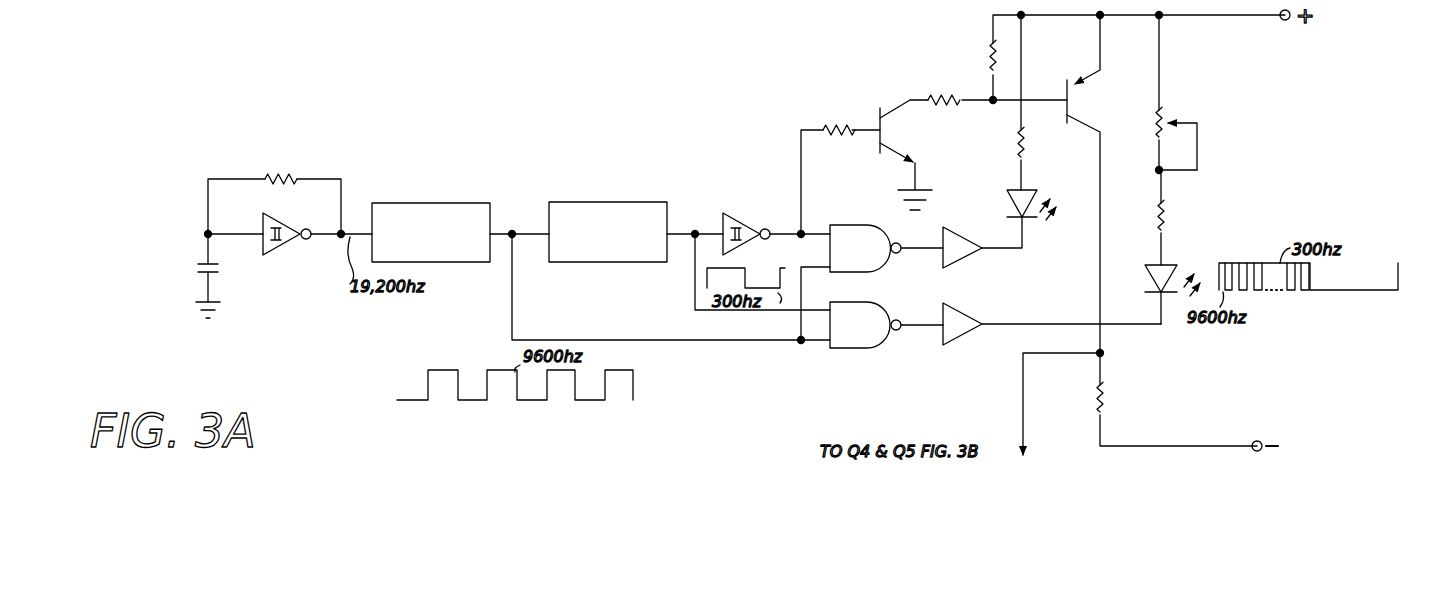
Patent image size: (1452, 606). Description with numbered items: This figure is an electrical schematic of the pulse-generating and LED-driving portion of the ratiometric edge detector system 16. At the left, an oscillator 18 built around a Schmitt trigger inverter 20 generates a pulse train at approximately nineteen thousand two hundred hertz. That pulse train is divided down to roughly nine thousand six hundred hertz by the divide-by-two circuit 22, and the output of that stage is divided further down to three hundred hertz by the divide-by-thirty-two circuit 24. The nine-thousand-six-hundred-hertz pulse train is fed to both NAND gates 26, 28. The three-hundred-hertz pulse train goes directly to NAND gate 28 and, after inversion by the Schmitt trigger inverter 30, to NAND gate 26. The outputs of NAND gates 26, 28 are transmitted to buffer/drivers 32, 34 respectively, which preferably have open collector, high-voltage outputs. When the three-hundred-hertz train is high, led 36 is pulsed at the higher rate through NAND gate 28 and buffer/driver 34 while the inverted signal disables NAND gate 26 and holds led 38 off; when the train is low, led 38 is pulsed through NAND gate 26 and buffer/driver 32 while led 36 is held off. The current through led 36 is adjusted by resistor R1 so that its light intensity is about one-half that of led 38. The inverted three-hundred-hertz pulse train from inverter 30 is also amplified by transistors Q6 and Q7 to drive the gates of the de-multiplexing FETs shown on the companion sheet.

The ratiometric edge detector system 16 is at (574, 105).
The oscillator 18 is at (298, 160).
The Schmitt trigger inverter 20 is at (277, 252).
The divide by 2 circuit 22 is at (448, 203).
The divide by 32 circuit 24 is at (635, 202).
The NAND gate 26 is at (847, 225).
The NAND gate 28 is at (870, 305).
The Schmitt trigger inverter 30 is at (733, 213).
The buffer/driver 32 is at (967, 225).
The buffer/driver 34 is at (967, 313).
The led 36 is at (1168, 268).
The led 38 is at (1030, 188).
The transistor Q6 is at (934, 160).
The transistor Q7 is at (1068, 184).
The resistor R1 is at (1189, 94).